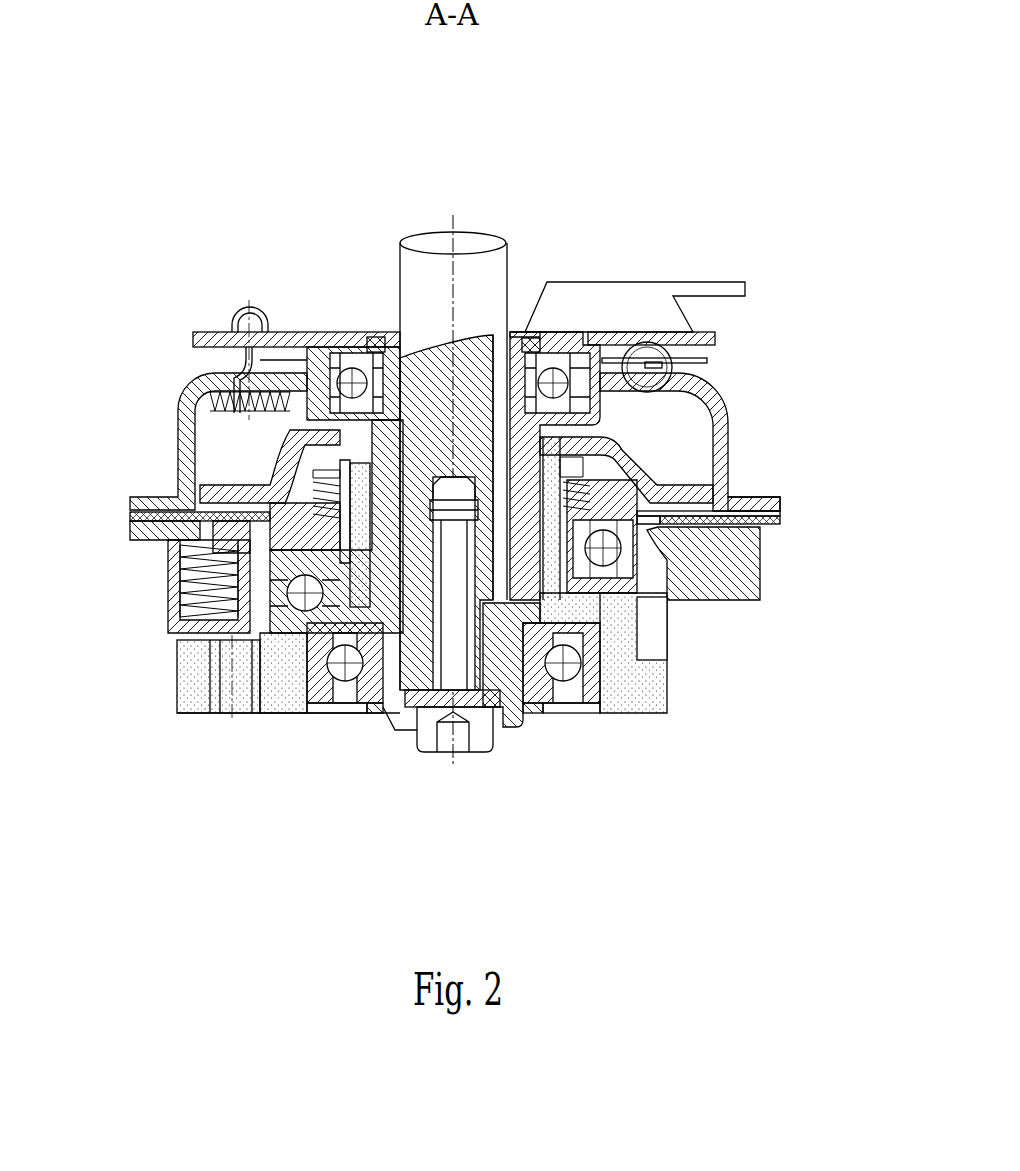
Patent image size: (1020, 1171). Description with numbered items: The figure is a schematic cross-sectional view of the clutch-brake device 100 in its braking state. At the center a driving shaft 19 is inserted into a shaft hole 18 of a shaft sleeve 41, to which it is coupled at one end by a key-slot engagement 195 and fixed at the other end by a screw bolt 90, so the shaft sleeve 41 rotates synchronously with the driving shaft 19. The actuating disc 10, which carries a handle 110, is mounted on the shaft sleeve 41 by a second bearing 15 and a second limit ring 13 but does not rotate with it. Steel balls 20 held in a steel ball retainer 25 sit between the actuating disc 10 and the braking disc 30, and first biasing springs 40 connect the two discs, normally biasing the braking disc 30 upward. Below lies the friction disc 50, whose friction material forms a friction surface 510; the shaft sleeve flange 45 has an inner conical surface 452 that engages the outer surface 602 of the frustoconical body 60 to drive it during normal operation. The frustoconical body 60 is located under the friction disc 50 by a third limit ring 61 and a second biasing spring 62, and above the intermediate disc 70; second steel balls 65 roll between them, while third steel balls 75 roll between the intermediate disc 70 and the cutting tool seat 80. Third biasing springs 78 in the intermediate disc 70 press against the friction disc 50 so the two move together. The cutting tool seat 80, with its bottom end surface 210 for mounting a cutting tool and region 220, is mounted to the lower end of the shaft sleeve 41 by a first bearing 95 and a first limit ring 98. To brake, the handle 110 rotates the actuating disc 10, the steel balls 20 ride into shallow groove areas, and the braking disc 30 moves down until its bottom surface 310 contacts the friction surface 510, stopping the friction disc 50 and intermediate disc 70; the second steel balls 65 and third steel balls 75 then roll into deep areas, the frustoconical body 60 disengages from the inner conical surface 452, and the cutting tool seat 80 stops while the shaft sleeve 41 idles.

The clutch-brake device 100 is at (479, 147).
The key-slot engagement 195 is at (500, 413).
The driving shaft 19 is at (420, 320).
The shaft hole 18 is at (510, 333).
The second limit ring 13 is at (533, 345).
The handle 110 is at (622, 300).
The steel balls 20 is at (640, 355).
The actuating disc 10 is at (715, 332).
The steel ball retainer 25 is at (707, 360).
The braking disc 30 is at (723, 412).
The shaft sleeve flange 45 is at (755, 505).
The bottom surface of the braking disc 310 is at (735, 515).
The friction disc 50 is at (780, 520).
The friction surface 510 is at (780, 533).
The frustoconical body 60 is at (660, 527).
The second steel balls 65 is at (610, 553).
The intermediate disc 70 is at (633, 588).
The cutting tool seat 80 is at (663, 668).
The screw bolt 90 is at (490, 738).
The shaft sleeve 41 is at (397, 720).
The first limit ring 98 is at (377, 707).
The first bearing 95 is at (345, 670).
The bottom end surface 210 is at (283, 700).
The block 220 is at (235, 677).
The third steel balls 75 is at (300, 596).
The third biasing springs 78 is at (165, 555).
The second biasing spring 62 is at (330, 497).
The third limit ring 61 is at (327, 472).
The first biasing springs 40 is at (213, 408).
The second bearing 15 is at (373, 345).
The inner conical surface 452 is at (615, 462).
The outer surface 602 is at (620, 497).